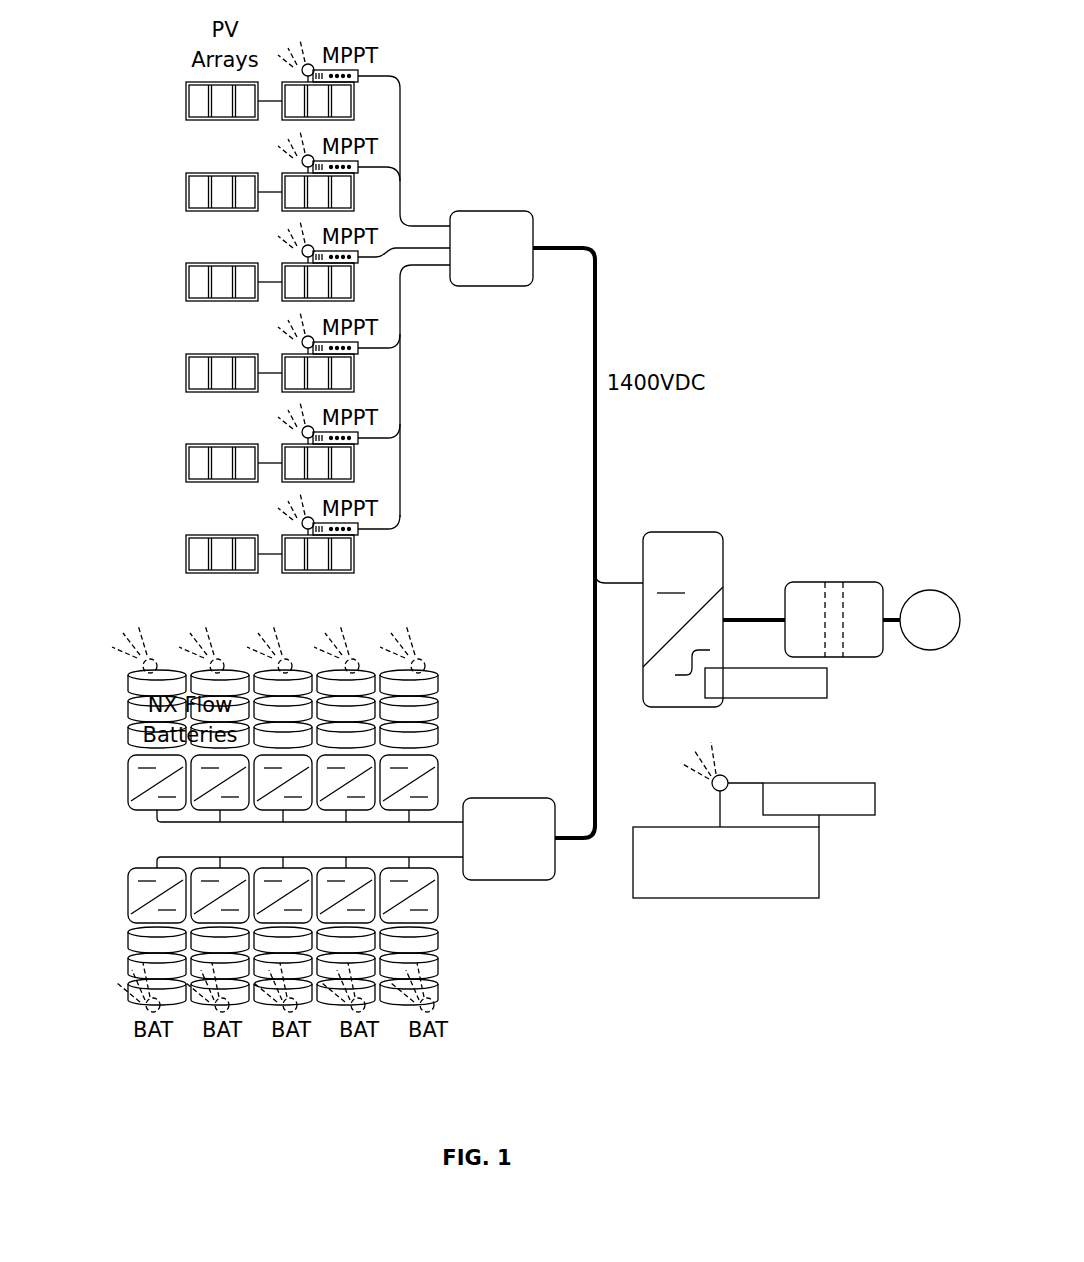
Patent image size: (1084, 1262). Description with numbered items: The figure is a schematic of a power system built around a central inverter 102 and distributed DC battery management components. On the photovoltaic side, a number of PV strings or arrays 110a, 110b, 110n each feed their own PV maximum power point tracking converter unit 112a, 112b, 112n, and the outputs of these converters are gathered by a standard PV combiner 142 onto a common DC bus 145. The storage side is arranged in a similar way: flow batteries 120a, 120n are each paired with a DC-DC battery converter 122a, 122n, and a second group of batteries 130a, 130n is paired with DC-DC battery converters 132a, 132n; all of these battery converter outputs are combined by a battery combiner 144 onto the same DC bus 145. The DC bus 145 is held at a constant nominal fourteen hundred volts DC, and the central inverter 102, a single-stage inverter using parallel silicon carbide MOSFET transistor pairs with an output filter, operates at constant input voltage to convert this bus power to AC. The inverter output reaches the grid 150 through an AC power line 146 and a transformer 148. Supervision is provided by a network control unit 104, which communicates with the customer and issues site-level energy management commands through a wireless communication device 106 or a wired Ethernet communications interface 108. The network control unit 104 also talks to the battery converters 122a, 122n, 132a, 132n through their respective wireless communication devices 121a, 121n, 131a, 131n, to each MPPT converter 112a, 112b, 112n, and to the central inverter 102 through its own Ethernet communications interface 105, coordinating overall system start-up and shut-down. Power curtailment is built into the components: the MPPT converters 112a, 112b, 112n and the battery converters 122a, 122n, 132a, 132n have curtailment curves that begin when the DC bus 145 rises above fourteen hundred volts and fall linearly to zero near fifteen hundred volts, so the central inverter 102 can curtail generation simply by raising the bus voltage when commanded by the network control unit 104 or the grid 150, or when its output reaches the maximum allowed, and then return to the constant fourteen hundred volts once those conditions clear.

The central inverter 102 is at (683, 530).
The network control unit 104 is at (819, 855).
The Ethernet communications interface 105 is at (827, 683).
The wireless communication device 106 is at (727, 776).
The Ethernet communications interface 108 is at (875, 799).
The PV array 110a is at (232, 82).
The PV array 110b is at (232, 173).
The PV array 110n is at (232, 531).
The PV maximum power point tracking converter unit 112a is at (358, 72).
The PV maximum power point tracking converter unit 112b is at (358, 163).
The PV maximum power point tracking converter unit 112n is at (358, 532).
The flow battery 120a is at (128, 712).
The flow battery 120n is at (438, 708).
The wireless communication device 121a is at (143, 666).
The wireless communication device 121n is at (425, 664).
The DC-DC battery converter 122a is at (128, 782).
The DC-DC battery converter 122n is at (438, 764).
The battery 130a is at (127, 938).
The battery 130n is at (438, 968).
The wireless communication device 131a is at (146, 1005).
The wireless communication device 131n is at (434, 1005).
The DC-DC battery converter 132a is at (126, 893).
The DC-DC battery converter 132n is at (438, 920).
The PV combiner 142 is at (515, 210).
The battery combiner 144 is at (555, 860).
The DC bus 145 is at (628, 575).
The AC power line 146 is at (756, 617).
The transformer 148 is at (817, 580).
The grid 150 is at (930, 590).